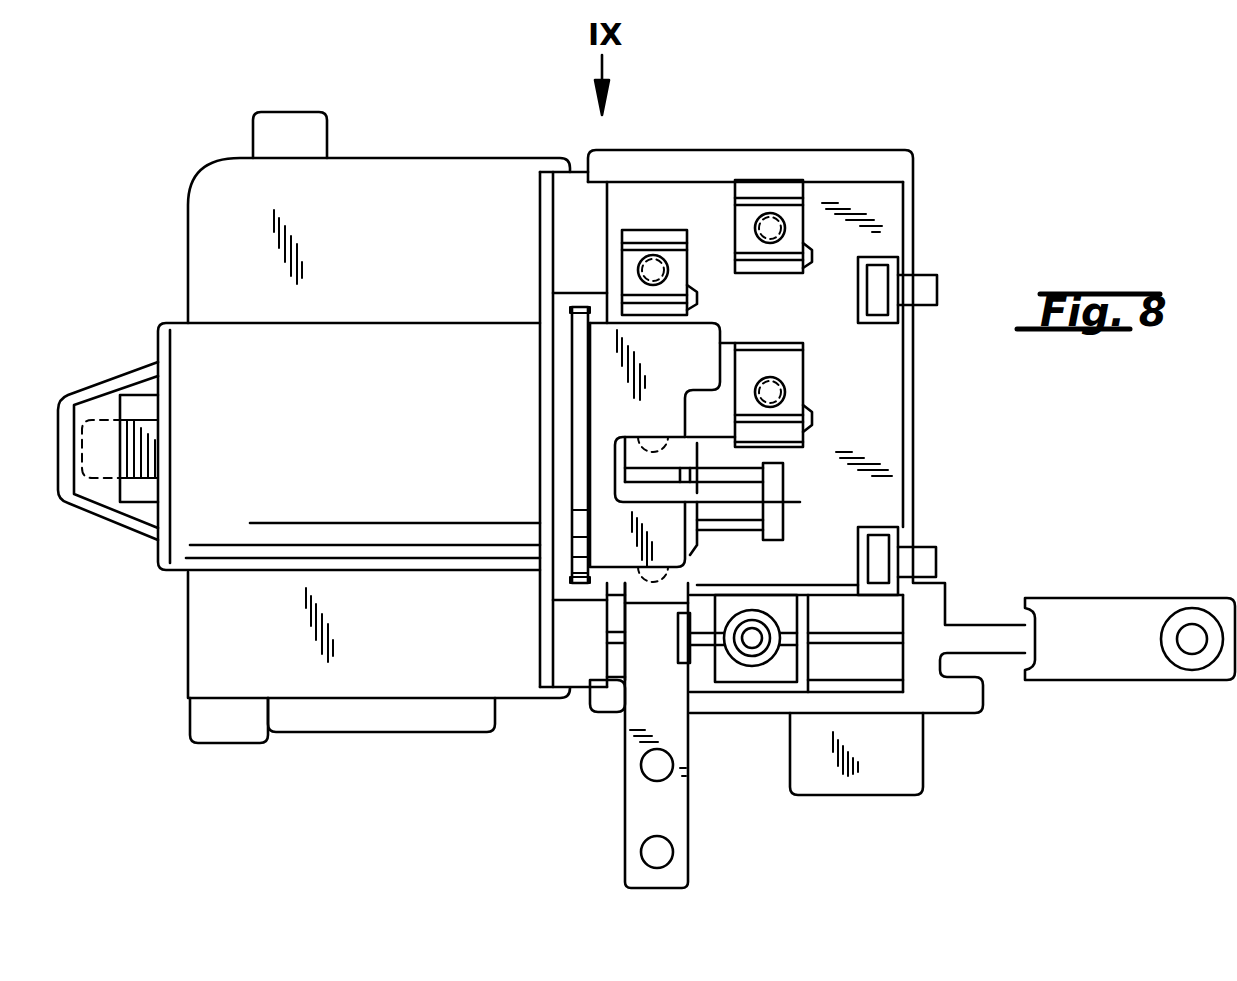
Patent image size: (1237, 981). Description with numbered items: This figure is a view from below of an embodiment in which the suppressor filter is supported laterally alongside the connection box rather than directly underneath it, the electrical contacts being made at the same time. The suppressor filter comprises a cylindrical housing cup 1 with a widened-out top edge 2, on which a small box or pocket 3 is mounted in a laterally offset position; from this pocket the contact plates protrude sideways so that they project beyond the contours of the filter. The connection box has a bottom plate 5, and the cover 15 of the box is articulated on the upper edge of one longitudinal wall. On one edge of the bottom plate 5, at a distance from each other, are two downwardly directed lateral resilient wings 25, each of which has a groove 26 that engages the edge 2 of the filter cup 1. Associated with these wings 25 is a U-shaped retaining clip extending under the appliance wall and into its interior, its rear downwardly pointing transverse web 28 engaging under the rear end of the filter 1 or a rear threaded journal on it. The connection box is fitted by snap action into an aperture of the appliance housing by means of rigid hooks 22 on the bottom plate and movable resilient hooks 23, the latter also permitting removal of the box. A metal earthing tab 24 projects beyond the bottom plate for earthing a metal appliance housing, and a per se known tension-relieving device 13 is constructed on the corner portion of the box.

The cylindrical housing cup 1 is at (352, 355).
The widened-out top edge 2 is at (578, 435).
The small box or pocket 3 is at (598, 380).
The bottom plate 5 is at (882, 417).
The tension-relieving device 13 is at (1137, 668).
The cover 15 is at (404, 150).
The rigid hooks 22 is at (555, 648).
The movable resilient hooks 23 is at (920, 293).
The metal earthing tab 24 is at (680, 825).
The lateral resilient wings 25 is at (568, 295).
The groove 26 is at (583, 307).
The transverse web 28 is at (105, 498).